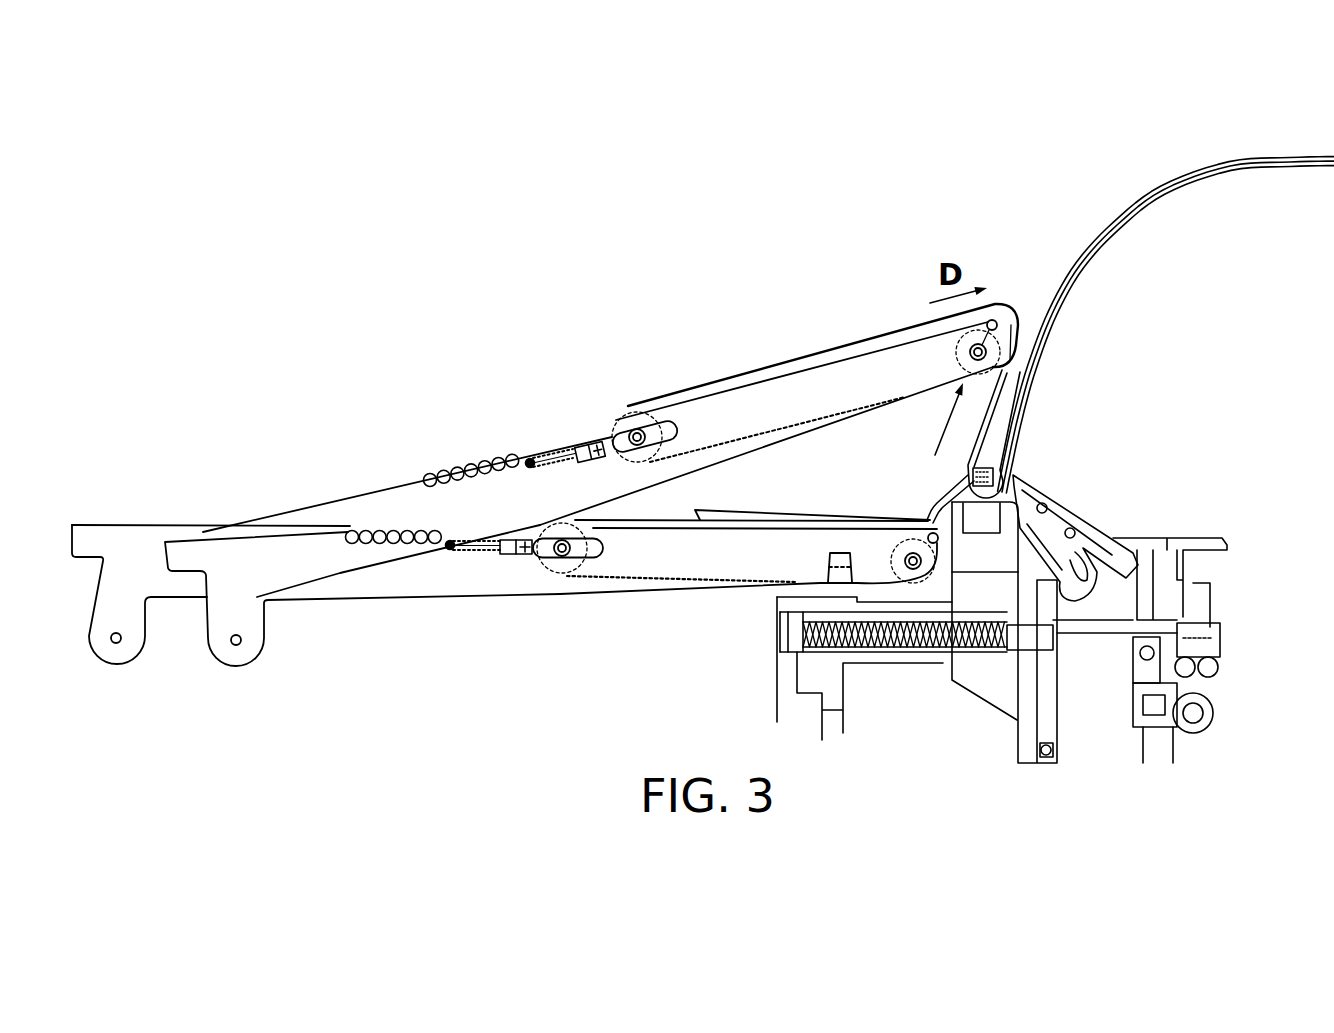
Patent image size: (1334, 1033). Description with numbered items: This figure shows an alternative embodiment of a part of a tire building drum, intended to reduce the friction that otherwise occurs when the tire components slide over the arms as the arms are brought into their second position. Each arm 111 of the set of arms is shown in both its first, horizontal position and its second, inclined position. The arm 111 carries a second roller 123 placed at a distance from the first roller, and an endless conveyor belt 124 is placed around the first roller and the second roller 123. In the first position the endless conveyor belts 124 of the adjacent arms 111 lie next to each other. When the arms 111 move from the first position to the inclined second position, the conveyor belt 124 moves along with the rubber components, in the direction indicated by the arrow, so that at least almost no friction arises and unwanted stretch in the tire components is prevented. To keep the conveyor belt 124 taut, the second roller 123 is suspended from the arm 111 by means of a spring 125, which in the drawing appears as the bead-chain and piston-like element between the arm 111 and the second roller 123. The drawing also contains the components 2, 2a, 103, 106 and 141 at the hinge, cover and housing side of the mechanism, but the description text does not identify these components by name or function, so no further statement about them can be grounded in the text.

The cover 2 is at (1262, 172).
The cover hinge portion 2a is at (1043, 300).
The hinge bracket 103 is at (1003, 433).
The spring housing of main body 106 is at (978, 560).
The arm 111 is at (293, 513).
The second roller 123 is at (625, 413).
The endless conveyor belt 124 is at (768, 368).
The spring 125 is at (541, 448).
The latch lever 141 is at (1072, 533).